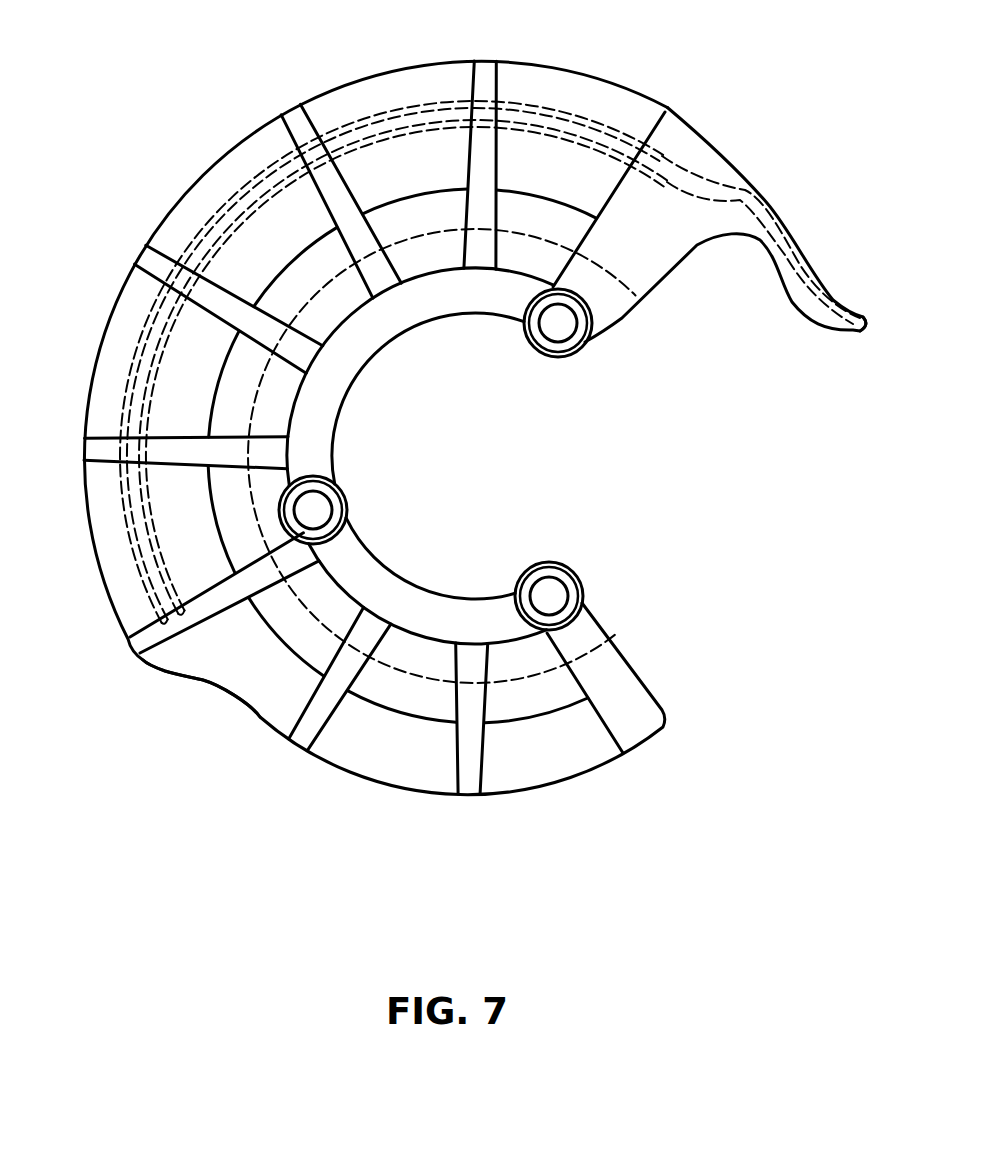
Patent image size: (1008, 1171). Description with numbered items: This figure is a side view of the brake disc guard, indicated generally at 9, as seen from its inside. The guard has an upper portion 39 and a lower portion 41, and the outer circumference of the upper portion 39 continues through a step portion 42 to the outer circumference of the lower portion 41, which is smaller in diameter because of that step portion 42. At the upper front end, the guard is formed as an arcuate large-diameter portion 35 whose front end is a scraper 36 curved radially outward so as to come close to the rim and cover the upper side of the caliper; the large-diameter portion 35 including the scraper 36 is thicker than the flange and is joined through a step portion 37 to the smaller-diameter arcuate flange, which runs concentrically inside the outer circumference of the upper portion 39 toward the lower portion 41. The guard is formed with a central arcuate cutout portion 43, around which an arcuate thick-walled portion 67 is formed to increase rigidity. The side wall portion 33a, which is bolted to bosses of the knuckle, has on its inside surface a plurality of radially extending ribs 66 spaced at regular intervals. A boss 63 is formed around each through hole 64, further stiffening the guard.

The disc cover 9 is at (463, 438).
The side wall portion 33a is at (120, 562).
The large-diameter portion 35 is at (806, 240).
The scraper 36 is at (868, 318).
The step portion 37 is at (713, 178).
The upper portion 39 is at (615, 102).
The lower portion 41 is at (433, 765).
The step portion 42 is at (167, 672).
The central arcuate cutout portion 43 is at (374, 361).
The boss 63 is at (580, 343).
The through hole 64 is at (566, 325).
The rib 66 is at (344, 184).
The arcuate thick-walled portion 67 is at (432, 318).